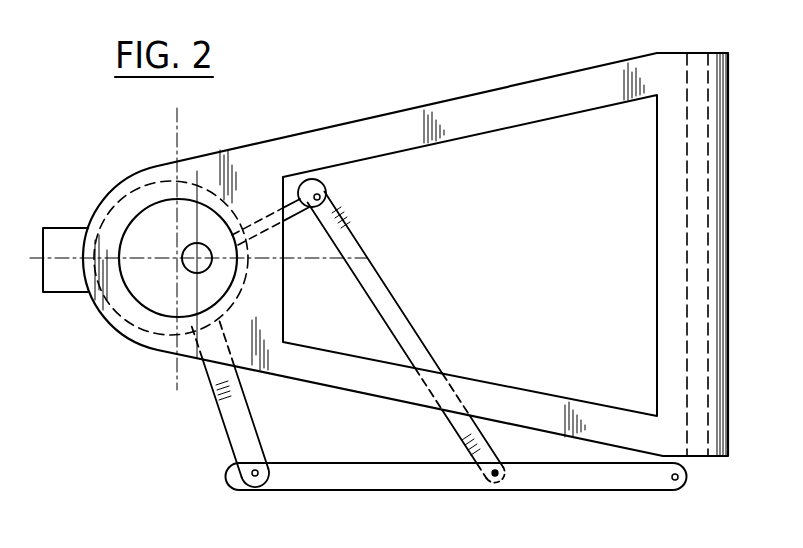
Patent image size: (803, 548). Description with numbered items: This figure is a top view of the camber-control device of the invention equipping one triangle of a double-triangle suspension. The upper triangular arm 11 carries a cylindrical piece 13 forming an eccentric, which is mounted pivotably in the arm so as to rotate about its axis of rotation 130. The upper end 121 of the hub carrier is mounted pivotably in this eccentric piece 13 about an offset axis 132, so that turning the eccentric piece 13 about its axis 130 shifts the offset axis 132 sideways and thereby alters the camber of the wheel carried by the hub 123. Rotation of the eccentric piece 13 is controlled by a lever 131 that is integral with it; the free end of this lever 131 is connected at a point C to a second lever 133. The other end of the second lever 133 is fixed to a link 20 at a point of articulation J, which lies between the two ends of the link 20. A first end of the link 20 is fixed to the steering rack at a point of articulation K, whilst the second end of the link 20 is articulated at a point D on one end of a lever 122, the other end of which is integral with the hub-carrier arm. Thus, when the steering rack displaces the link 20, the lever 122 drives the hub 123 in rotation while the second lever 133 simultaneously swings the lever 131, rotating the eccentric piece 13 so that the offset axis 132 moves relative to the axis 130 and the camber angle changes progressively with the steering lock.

The upper triangular arm 11 is at (492, 110).
The eccentric piece 13 is at (150, 287).
The link 20 is at (550, 478).
The upper end of the hub carrier 121 is at (205, 268).
The lever 122 is at (238, 418).
The hub 123 is at (64, 283).
The axis of rotation 130 is at (178, 258).
The lever 131 is at (293, 210).
The offset axis 132 is at (197, 252).
The second lever 133 is at (415, 323).
The pivot C is at (335, 195).
The point of articulation D is at (243, 483).
The point of articulation J is at (497, 470).
The point of articulation K is at (683, 478).